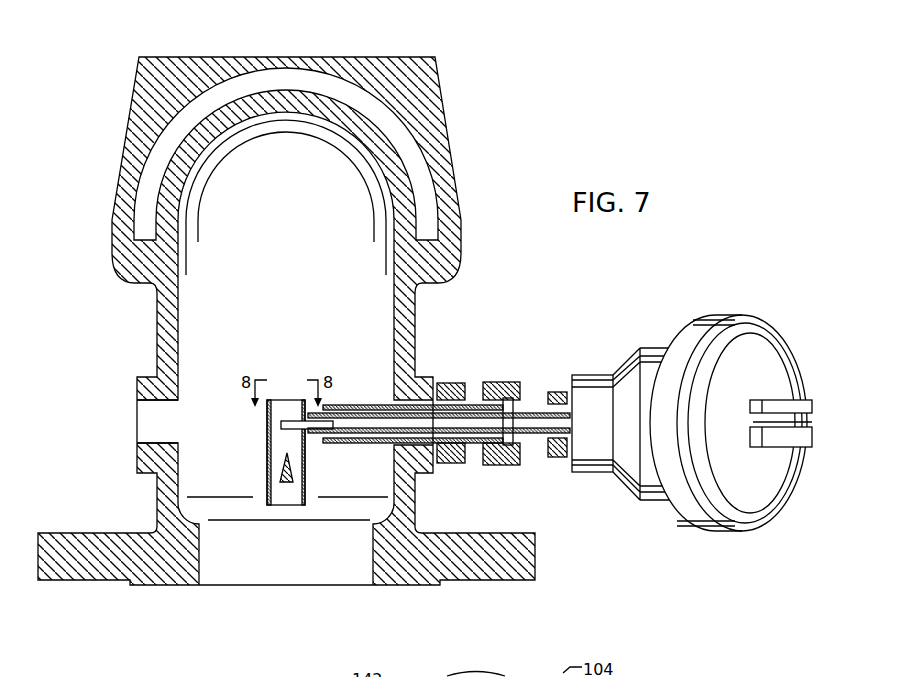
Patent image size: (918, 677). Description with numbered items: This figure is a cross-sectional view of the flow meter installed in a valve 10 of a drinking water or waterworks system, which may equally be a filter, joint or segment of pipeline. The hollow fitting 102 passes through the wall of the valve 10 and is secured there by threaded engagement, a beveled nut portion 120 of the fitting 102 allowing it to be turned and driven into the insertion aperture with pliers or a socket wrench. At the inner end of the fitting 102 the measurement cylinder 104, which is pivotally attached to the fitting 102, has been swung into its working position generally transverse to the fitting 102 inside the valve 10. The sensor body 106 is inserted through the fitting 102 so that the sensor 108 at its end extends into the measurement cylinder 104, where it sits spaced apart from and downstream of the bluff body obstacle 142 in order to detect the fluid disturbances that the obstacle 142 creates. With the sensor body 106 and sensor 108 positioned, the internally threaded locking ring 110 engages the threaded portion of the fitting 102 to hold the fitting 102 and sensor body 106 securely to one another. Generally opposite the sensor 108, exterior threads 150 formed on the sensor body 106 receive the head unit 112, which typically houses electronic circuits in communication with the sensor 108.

The valve 10 is at (156, 348).
The fitting 102 is at (327, 438).
The measurement cylinder 104 is at (267, 447).
The sensor body 106 is at (382, 418).
The sensor 108 is at (295, 422).
The locking ring 110 is at (512, 385).
The head unit 112 is at (733, 327).
The beveled nut portion 120 is at (452, 385).
The bluff body obstacle 142 is at (287, 482).
The exterior threads 150 is at (548, 438).